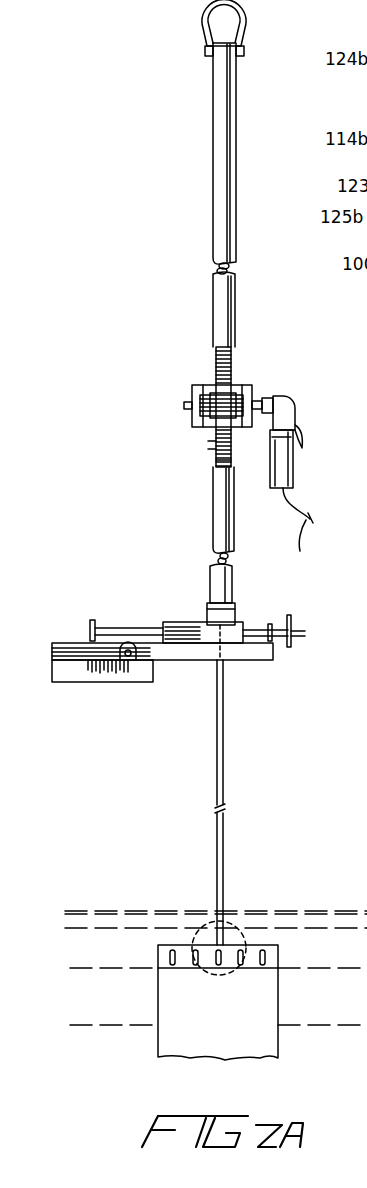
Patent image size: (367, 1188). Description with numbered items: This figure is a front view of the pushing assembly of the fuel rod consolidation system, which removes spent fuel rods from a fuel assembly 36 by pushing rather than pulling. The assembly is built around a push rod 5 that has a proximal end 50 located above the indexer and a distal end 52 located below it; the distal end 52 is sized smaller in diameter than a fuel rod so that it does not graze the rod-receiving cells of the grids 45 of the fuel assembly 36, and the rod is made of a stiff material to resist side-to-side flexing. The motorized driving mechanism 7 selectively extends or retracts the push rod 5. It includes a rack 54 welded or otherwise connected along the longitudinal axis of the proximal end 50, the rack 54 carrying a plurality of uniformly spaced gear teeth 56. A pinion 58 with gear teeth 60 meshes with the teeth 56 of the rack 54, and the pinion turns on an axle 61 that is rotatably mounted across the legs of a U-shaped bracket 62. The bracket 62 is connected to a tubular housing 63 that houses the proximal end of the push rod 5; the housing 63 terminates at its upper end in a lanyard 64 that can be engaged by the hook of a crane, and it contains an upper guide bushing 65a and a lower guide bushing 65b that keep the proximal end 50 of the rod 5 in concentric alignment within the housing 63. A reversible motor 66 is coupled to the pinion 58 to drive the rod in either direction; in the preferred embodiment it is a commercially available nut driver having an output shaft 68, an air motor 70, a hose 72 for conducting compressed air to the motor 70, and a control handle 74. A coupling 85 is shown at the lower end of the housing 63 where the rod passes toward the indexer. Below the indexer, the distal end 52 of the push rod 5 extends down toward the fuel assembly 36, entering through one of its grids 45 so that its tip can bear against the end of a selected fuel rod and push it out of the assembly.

The eye ring 64 is at (203, 25).
The upper guide bushing 65a is at (236, 209).
The motorized driving mechanism 7 is at (135, 344).
The proximal end 50 is at (232, 360).
The U-shaped bracket 62 is at (240, 388).
The gear teeth 60 is at (193, 406).
The pinion 58 is at (200, 393).
The axle 61 is at (190, 406).
The gear teeth 56 is at (213, 449).
The rack 54 is at (213, 462).
The output shaft 68 is at (272, 412).
The reversible motor 66 is at (288, 454).
The control handle 74 is at (301, 438).
The air motor 70 is at (280, 478).
The hose 72 is at (307, 528).
The tubular housing 63 is at (215, 512).
The lower guide bushing 65b is at (208, 612).
The coupling 85 is at (235, 618).
The push rod 5 is at (224, 727).
The distal end 52 is at (224, 863).
The grid 45 is at (282, 958).
The fuel assembly 36 is at (155, 1003).